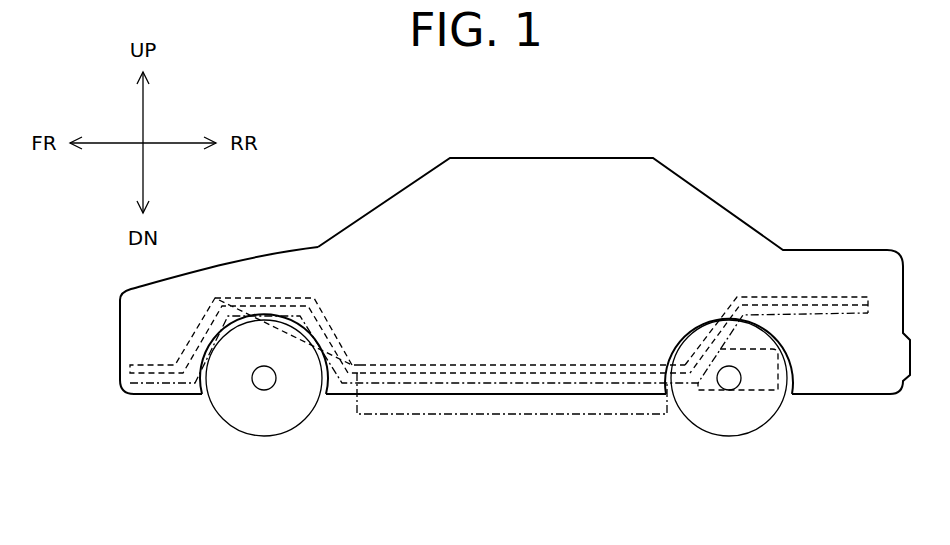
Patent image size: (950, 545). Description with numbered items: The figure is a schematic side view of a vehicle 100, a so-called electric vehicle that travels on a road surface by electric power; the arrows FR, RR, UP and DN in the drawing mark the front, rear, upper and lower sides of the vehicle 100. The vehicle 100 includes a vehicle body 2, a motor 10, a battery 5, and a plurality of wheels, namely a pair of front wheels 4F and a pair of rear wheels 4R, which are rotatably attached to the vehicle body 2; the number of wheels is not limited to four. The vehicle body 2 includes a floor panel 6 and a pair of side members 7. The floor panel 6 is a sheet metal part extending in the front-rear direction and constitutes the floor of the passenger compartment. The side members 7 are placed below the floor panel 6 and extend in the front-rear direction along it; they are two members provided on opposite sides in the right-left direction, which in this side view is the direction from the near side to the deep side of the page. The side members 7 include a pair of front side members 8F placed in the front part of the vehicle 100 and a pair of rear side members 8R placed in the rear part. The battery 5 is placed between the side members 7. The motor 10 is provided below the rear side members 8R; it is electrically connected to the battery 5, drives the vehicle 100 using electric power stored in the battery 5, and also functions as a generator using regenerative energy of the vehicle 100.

The vehicle 100 is at (761, 128).
The vehicle body 2 is at (267, 262).
The front wheels 4F is at (263, 428).
The rear wheels 4R is at (729, 437).
The battery 5 is at (477, 407).
The floor panel 6 is at (528, 368).
The side members 7 is at (390, 415).
The front side members 8F is at (185, 385).
The rear side members 8R is at (843, 313).
The motor 10 is at (757, 385).